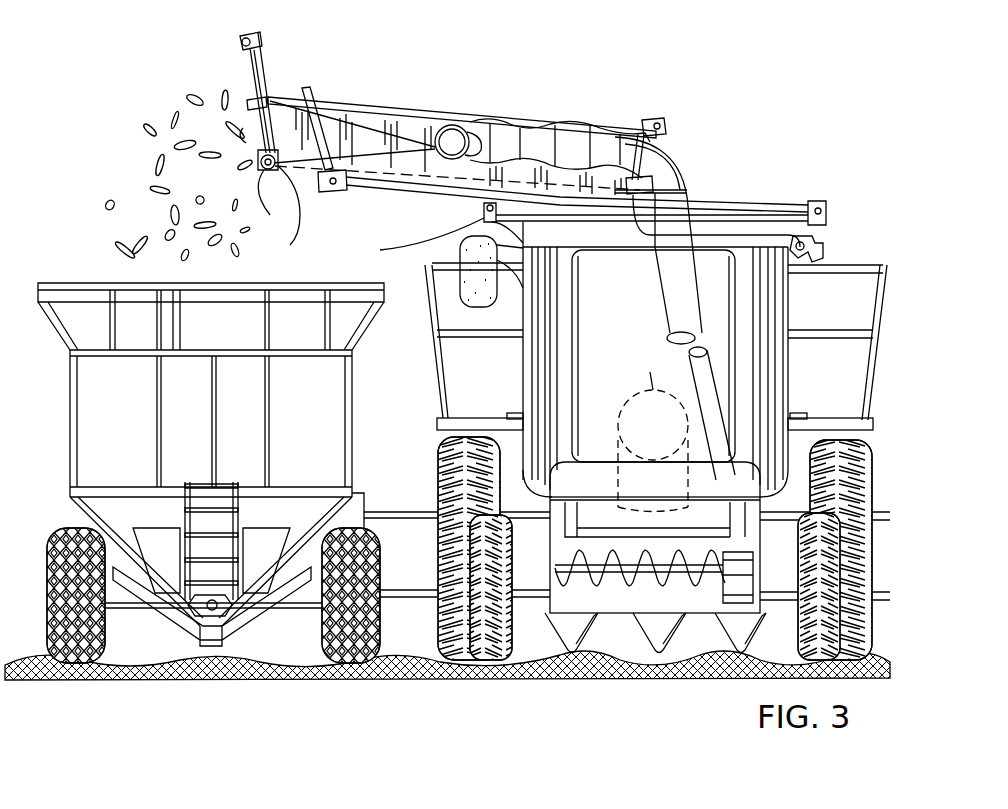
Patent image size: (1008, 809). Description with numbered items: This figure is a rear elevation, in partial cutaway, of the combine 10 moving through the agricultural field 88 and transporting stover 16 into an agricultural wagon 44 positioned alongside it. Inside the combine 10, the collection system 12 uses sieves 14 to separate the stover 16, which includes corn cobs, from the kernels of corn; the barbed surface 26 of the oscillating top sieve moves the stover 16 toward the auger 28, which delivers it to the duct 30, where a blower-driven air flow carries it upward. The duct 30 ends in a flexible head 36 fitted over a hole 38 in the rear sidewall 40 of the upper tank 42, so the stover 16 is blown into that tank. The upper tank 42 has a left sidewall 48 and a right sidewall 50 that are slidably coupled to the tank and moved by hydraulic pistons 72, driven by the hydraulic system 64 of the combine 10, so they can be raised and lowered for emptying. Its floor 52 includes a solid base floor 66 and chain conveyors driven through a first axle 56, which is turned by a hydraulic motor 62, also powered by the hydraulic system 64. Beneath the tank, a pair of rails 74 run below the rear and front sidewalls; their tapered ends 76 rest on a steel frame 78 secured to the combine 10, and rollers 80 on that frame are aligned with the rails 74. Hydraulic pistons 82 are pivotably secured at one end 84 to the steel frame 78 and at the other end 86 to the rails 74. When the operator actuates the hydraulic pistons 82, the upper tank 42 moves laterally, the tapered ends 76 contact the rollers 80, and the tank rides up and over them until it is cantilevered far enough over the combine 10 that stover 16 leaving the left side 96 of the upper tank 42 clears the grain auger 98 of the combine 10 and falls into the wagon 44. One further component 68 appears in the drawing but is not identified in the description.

The combine 10 is at (215, 195).
The collection system 12 is at (565, 635).
The sieves 14 is at (648, 372).
The stover 16 is at (138, 215).
The barbed surface 26 is at (613, 575).
The auger 28 is at (612, 560).
The duct 30 is at (670, 292).
The flexible head 36 is at (465, 125).
The hole 38 is at (535, 128).
The rear sidewall 40 is at (420, 120).
The upper tank 42 is at (585, 118).
The agricultural wagon 44 is at (425, 262).
The left sidewall 48 is at (252, 70).
The right sidewall 50 is at (645, 118).
The floor 52 is at (352, 45).
The first axle 56 is at (262, 170).
The hydraulic motor 62 is at (275, 172).
The hydraulic system 64 is at (823, 246).
The base floor 66 is at (295, 250).
The clamp 68 is at (648, 183).
The hydraulic pistons 72 is at (252, 104).
The rails 74 is at (400, 195).
The tapered ends 76 is at (365, 110).
The steel frame 78 is at (633, 240).
The rollers 80 is at (392, 249).
The hydraulic pistons 82 is at (742, 200).
The one end 84 is at (826, 212).
The other end 86 is at (345, 155).
The agricultural field 88 is at (665, 628).
The left side 96 is at (245, 133).
The grain auger 98 is at (460, 255).